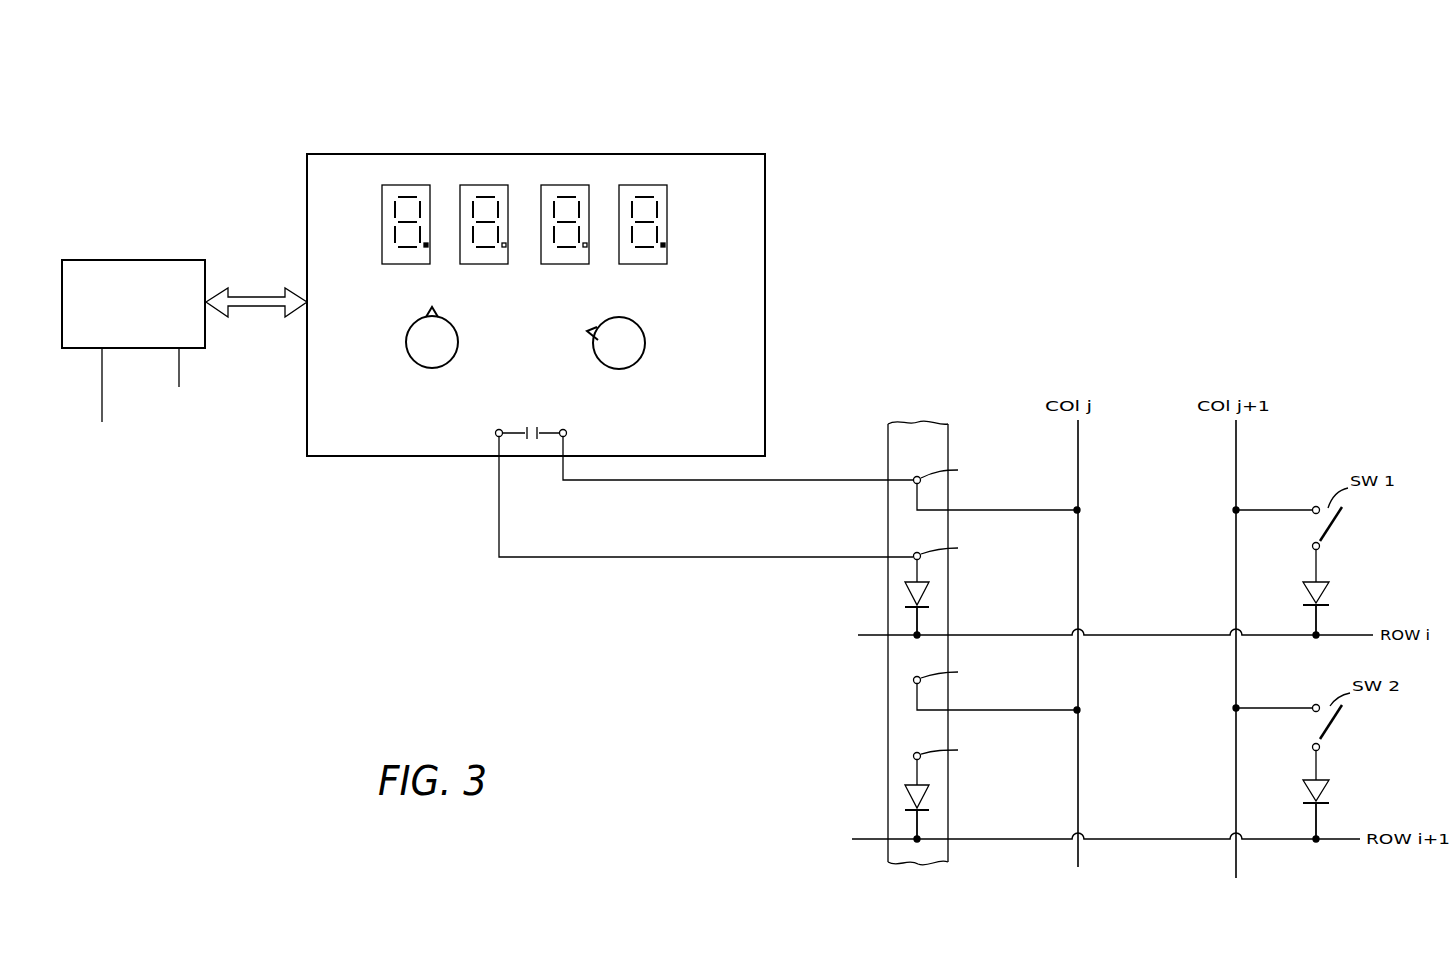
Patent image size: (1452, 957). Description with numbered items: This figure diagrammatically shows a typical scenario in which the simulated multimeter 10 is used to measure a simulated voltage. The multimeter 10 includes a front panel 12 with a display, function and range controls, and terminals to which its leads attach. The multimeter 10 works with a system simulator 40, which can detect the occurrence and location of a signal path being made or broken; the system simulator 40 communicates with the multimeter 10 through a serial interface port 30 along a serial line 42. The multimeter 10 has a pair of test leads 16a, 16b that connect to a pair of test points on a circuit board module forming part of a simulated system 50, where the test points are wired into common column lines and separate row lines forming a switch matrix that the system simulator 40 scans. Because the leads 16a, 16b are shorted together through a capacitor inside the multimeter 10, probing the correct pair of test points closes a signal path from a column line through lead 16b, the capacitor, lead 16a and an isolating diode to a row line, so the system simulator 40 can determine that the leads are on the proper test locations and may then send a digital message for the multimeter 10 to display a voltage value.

The digital multimeter 12 is at (602, 154).
The system simulator 40 is at (143, 260).
The serial line 42 is at (251, 290).
The serial I/F port 30 is at (300, 320).
The simulated multimeter 10 is at (293, 491).
The test lead 16a is at (814, 555).
The test lead 16b is at (813, 478).
The simulated system 50 is at (816, 713).